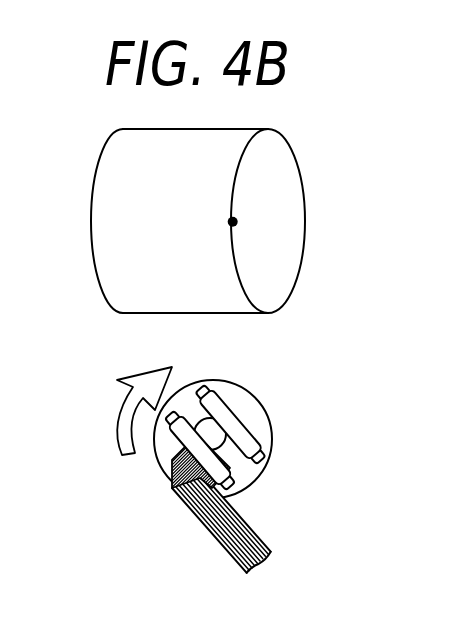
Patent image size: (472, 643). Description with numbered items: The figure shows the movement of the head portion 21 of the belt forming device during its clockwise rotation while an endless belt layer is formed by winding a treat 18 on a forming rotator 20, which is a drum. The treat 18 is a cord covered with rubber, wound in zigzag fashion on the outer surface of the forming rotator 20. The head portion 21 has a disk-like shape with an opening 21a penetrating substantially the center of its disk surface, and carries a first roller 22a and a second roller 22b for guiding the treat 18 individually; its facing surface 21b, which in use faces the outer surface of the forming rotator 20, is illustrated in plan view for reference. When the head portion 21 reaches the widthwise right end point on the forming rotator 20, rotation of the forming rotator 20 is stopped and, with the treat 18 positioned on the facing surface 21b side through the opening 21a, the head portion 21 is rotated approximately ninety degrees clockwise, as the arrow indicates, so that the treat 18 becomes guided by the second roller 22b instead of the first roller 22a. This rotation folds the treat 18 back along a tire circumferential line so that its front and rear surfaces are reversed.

The treat 18 is at (205, 542).
The forming rotator 20 is at (291, 150).
The head portion 21 is at (251, 418).
The opening 21a is at (199, 423).
The facing surface 21b is at (247, 469).
The first roller 22a is at (216, 405).
The second roller 22b is at (180, 433).